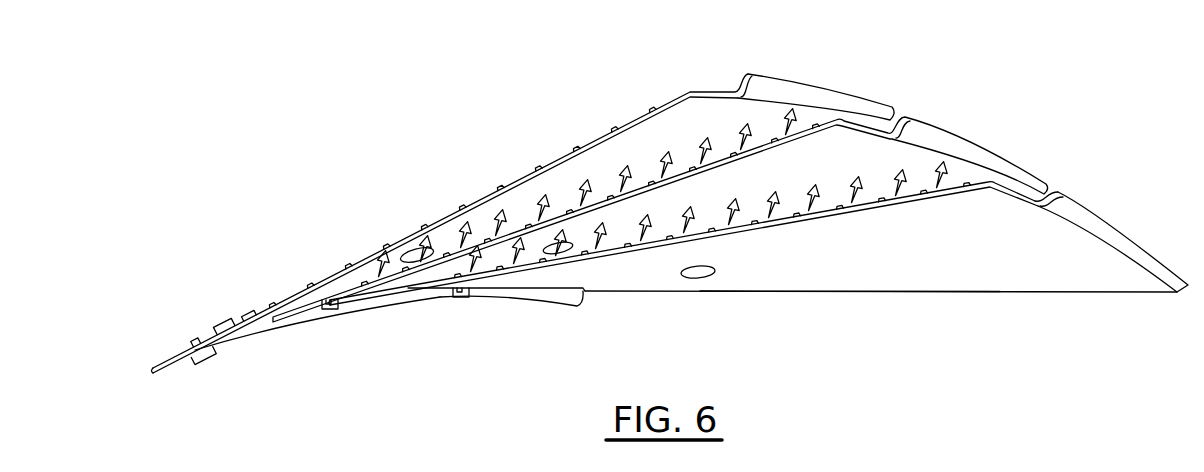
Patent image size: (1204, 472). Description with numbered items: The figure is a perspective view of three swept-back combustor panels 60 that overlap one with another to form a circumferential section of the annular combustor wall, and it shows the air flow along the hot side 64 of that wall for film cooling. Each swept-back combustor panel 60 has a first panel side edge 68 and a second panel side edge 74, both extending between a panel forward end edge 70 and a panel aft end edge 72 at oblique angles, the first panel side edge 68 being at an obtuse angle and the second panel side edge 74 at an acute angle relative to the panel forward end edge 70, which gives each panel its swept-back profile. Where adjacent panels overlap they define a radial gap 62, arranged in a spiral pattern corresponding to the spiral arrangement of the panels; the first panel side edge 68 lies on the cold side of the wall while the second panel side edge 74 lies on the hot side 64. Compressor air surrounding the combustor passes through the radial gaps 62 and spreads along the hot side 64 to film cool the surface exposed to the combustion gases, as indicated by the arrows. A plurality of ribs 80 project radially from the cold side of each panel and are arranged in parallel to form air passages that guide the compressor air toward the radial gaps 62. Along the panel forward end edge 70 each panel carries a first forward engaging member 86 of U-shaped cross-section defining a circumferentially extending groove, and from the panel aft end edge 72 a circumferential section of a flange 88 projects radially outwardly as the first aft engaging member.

The swept-back combustor panel 60 is at (828, 272).
The radial gap 62 is at (1052, 190).
The hot side 64 is at (978, 271).
The first panel side edge 68 is at (718, 293).
The panel forward end edge 70 is at (520, 287).
The panel aft end edge 72 is at (1137, 258).
The second panel side edge 74 is at (898, 198).
The rib 80 is at (258, 312).
The first forward engaging member 86 is at (262, 330).
The flange 88 is at (822, 87).